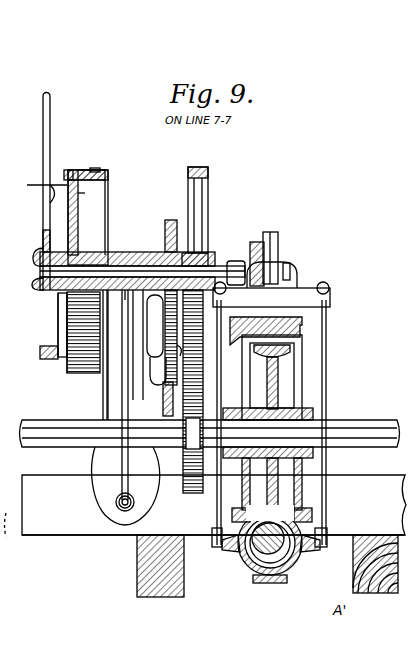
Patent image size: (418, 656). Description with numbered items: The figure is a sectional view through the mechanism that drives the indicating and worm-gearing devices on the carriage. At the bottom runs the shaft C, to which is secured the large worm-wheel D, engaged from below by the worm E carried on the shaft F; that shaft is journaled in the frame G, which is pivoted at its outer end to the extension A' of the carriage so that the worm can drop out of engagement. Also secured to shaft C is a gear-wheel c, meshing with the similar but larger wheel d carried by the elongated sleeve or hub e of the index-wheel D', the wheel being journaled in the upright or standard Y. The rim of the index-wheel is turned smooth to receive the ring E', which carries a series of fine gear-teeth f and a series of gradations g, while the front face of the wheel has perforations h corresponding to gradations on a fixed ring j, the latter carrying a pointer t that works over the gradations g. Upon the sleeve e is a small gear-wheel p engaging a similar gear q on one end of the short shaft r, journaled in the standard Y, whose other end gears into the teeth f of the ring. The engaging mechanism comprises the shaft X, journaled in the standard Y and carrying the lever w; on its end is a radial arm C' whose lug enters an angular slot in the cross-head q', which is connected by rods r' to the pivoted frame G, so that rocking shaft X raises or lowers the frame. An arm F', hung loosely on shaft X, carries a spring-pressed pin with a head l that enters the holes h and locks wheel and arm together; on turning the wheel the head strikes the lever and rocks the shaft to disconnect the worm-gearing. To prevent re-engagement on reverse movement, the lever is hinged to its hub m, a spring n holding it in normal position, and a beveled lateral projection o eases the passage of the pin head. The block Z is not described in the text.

The lever w is at (34, 192).
The ring j is at (36, 187).
The beveled lateral projection o is at (43, 193).
The index-wheel D' is at (88, 282).
The pointer t is at (78, 170).
The ring E' is at (93, 163).
The gear-teeth f is at (100, 171).
The perforations h is at (86, 193).
The shaft X is at (110, 272).
The spring n is at (35, 257).
The hub m is at (33, 284).
The small gear-wheel p is at (170, 221).
The gear-wheel d is at (203, 216).
The sleeve or hub e is at (215, 262).
The radial arm C' is at (257, 251).
The gear q is at (282, 258).
The rods r' is at (277, 423).
The block Z is at (266, 327).
The worm-wheel D is at (268, 428).
The shaft F is at (272, 545).
The frame G is at (271, 563).
The worm E is at (171, 449).
The shaft C is at (210, 424).
The gear-wheel c is at (190, 493).
The short shaft r is at (173, 337).
The cross-head q' is at (159, 399).
The arm F' is at (42, 325).
The gradations g is at (72, 317).
The head l is at (40, 352).
The upright or standard Y is at (116, 355).
The extension A' is at (213, 575).